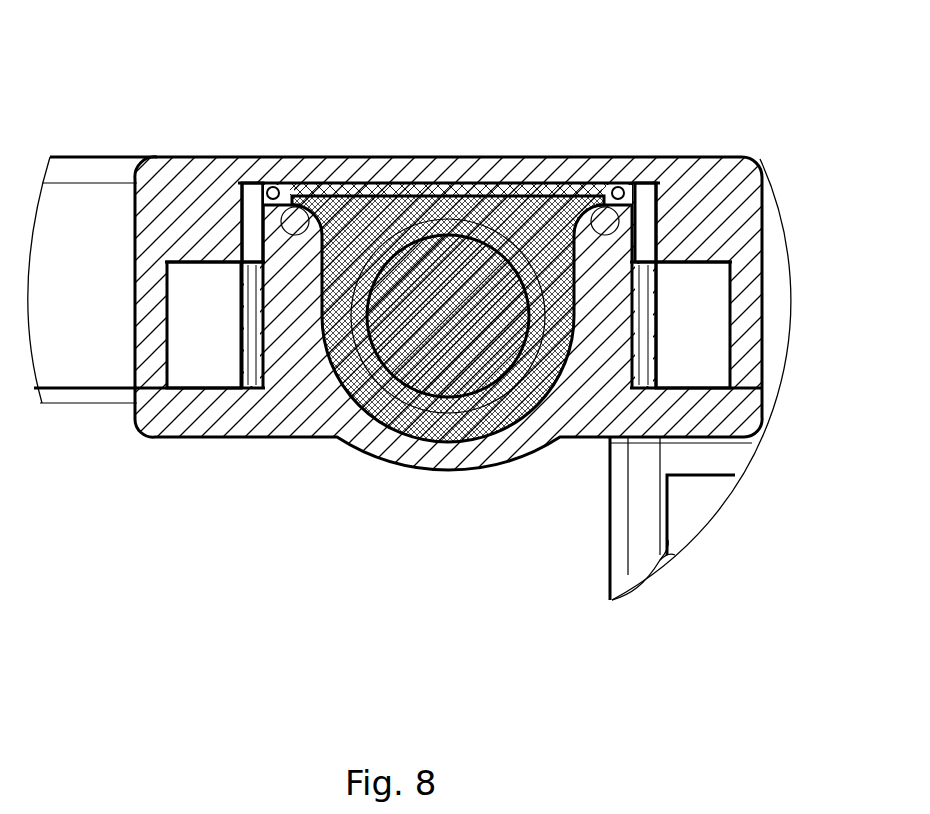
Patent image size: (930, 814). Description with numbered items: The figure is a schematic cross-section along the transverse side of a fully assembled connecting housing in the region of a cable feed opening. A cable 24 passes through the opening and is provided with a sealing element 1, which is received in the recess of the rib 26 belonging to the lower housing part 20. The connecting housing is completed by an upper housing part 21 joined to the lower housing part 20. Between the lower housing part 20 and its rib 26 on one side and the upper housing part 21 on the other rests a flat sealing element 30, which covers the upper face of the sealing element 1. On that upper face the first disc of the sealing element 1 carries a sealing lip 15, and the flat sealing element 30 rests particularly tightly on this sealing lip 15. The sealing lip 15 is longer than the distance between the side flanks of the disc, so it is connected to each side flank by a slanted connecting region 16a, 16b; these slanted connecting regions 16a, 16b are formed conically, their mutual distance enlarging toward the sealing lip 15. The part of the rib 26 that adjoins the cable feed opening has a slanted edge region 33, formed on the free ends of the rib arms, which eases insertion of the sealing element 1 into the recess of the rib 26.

The sealing element 1 is at (500, 433).
The sealing lip 15 is at (407, 182).
The slanted connecting region 16a is at (345, 195).
The slanted connecting region 16b is at (546, 192).
The lower housing part 20 is at (180, 413).
The upper housing part 21 is at (193, 190).
The cable 24 is at (445, 365).
The rib 26 is at (295, 300).
The flat sealing element 30 is at (474, 165).
The slanted edge region 33 is at (285, 197).